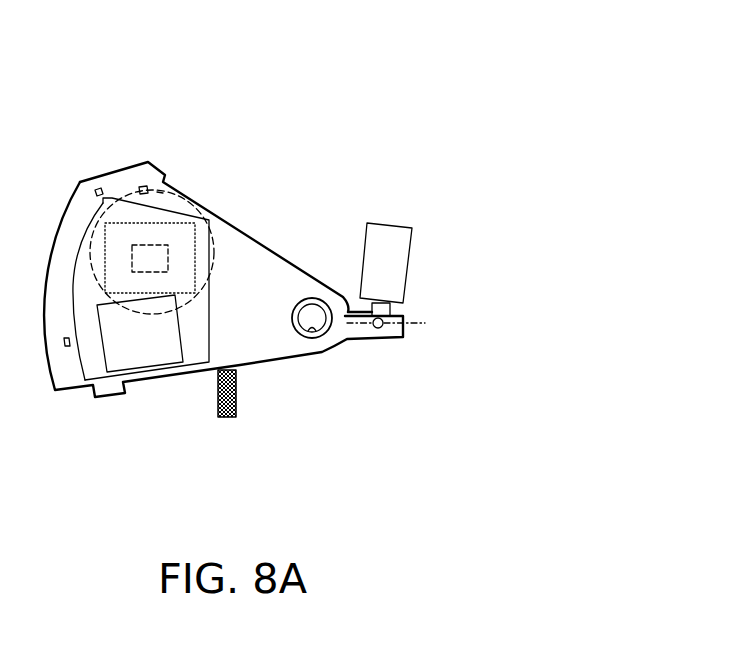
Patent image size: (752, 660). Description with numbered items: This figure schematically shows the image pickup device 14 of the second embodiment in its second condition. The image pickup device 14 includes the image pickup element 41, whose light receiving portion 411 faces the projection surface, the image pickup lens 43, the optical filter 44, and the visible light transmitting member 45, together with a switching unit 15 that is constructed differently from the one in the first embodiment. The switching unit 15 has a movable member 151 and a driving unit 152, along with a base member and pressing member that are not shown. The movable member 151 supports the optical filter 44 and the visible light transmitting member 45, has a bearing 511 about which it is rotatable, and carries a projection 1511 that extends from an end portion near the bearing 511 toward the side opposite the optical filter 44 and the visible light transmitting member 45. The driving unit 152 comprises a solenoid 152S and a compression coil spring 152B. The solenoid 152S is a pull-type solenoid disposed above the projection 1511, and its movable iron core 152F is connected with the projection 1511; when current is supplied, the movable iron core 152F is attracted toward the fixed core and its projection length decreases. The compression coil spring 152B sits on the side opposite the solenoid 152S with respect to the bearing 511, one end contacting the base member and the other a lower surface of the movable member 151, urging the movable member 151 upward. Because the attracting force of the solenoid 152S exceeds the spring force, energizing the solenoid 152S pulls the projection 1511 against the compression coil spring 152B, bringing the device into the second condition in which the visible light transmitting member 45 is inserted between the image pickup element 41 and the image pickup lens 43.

The image pickup device 14 is at (380, 80).
The switching unit 15 is at (372, 202).
The movable member 151 is at (72, 373).
The projection 1511 is at (387, 332).
The driving unit 152 is at (350, 358).
The solenoid 152S is at (402, 243).
The movable iron core 152F is at (392, 310).
The compression coil spring 152B is at (205, 424).
The image pickup element 41 is at (220, 252).
The light receiving portion 411 is at (178, 255).
The image pickup lens 43 is at (130, 190).
The optical filter 44 is at (147, 353).
The visible light transmitting member 45 is at (158, 232).
The bearing 511 is at (320, 338).